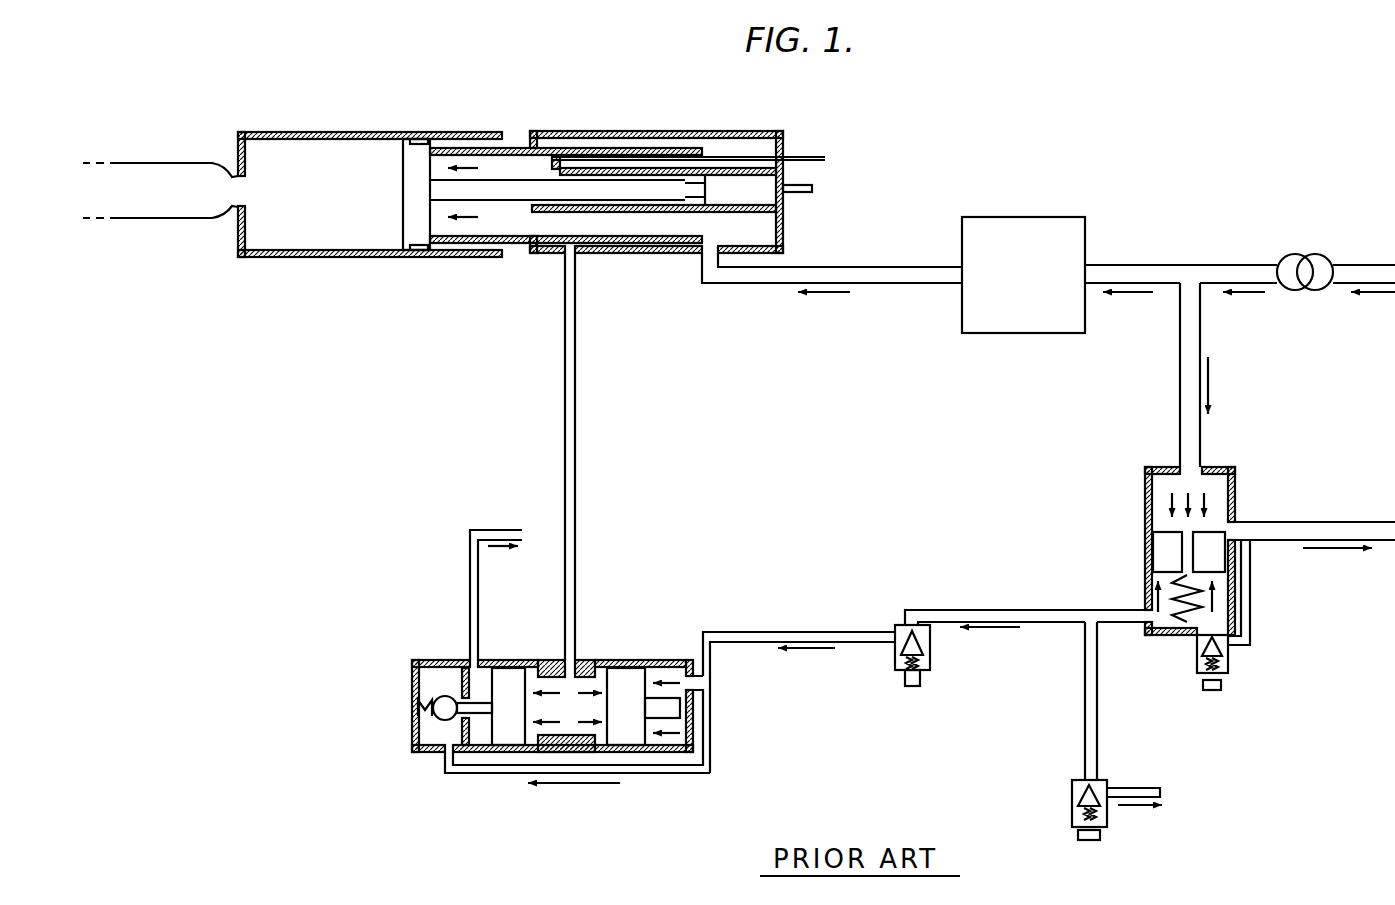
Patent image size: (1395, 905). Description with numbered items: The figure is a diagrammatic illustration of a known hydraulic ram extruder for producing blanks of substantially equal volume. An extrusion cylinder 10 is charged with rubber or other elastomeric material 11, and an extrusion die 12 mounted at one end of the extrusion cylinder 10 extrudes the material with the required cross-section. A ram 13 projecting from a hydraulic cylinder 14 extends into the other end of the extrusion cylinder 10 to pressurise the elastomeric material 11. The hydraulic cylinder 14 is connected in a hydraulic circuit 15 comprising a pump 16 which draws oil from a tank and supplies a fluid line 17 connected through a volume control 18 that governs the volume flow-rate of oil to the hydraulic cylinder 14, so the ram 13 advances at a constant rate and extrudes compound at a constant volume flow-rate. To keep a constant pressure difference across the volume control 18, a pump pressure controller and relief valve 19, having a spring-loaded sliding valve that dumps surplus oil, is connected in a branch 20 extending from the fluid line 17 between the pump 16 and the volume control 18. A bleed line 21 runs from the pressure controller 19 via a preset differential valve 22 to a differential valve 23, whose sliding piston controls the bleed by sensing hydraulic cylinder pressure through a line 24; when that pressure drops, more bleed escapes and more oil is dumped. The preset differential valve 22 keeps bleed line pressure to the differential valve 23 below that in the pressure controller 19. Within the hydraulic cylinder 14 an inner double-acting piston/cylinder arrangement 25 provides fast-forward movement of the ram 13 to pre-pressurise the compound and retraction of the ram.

The extrusion cylinder 10 is at (267, 252).
The elastomeric material 11 is at (327, 222).
The extrusion die 12 is at (237, 223).
The ram 13 is at (410, 231).
The hydraulic cylinder 14 is at (607, 255).
The hydraulic circuit 15 is at (1216, 190).
The pump 16 is at (1300, 255).
The fluid line 17 is at (1125, 265).
The volume control 18 is at (1005, 222).
The pump pressure controller and relief valve 19 is at (1145, 485).
The branch 20 is at (1202, 332).
The bleed line 21 is at (1018, 608).
The preset differential valve 22 is at (895, 655).
The differential valve 23 is at (645, 754).
The line 24 is at (577, 475).
The inner double-acting piston/cylinder arrangement 25 is at (643, 188).